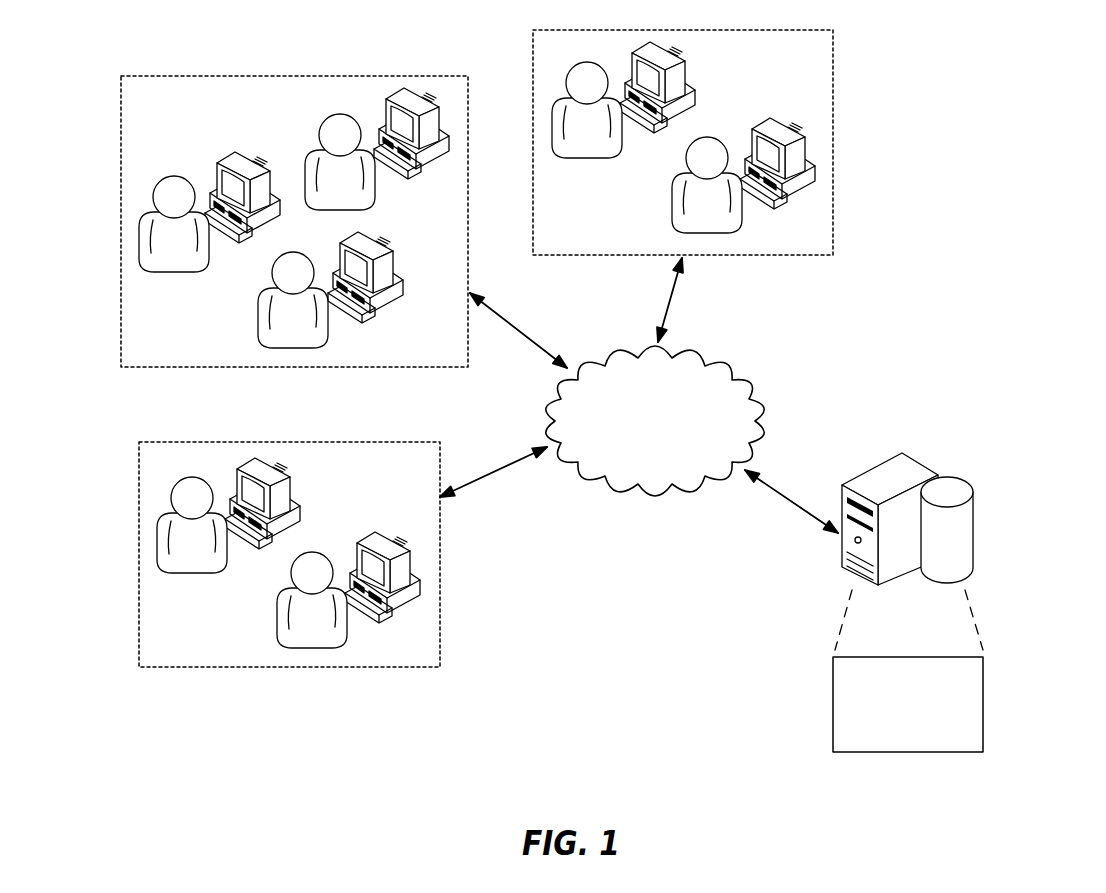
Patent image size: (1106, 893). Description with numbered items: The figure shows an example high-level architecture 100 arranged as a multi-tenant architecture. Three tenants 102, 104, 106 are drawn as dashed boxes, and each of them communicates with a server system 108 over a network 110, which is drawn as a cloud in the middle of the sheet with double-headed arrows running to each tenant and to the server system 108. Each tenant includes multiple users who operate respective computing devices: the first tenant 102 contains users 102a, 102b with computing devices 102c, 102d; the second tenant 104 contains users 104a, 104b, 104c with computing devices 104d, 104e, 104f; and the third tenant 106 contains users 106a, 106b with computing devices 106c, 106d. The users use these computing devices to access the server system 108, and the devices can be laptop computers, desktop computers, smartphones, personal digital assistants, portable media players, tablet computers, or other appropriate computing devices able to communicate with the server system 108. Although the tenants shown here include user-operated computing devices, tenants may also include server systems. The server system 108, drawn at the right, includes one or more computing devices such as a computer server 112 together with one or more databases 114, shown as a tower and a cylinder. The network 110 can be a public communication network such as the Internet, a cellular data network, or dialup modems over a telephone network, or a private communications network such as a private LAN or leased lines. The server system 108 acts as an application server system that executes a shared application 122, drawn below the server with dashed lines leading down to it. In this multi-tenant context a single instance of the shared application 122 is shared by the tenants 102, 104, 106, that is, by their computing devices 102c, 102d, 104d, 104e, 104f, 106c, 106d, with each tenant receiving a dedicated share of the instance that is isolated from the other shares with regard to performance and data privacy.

The architecture 100 is at (983, 263).
The tenant 102 is at (139, 553).
The user 102a is at (186, 573).
The user 102b is at (279, 632).
The computing device 102c is at (291, 481).
The computing device 102d is at (367, 532).
The tenant 104 is at (120, 221).
The user 104a is at (164, 178).
The user 104b is at (259, 307).
The user 104c is at (344, 114).
The computing device 104d is at (235, 152).
The computing device 104e is at (378, 238).
The computing device 104f is at (420, 97).
The tenant 106 is at (833, 141).
The user 106a is at (572, 160).
The user 106b is at (673, 215).
The computing device 106c is at (686, 72).
The computing device 106d is at (762, 120).
The server system 108 is at (957, 442).
The network 110 is at (758, 392).
The computer server 112 is at (886, 462).
The database 114 is at (973, 527).
The shared application 122 is at (984, 703).